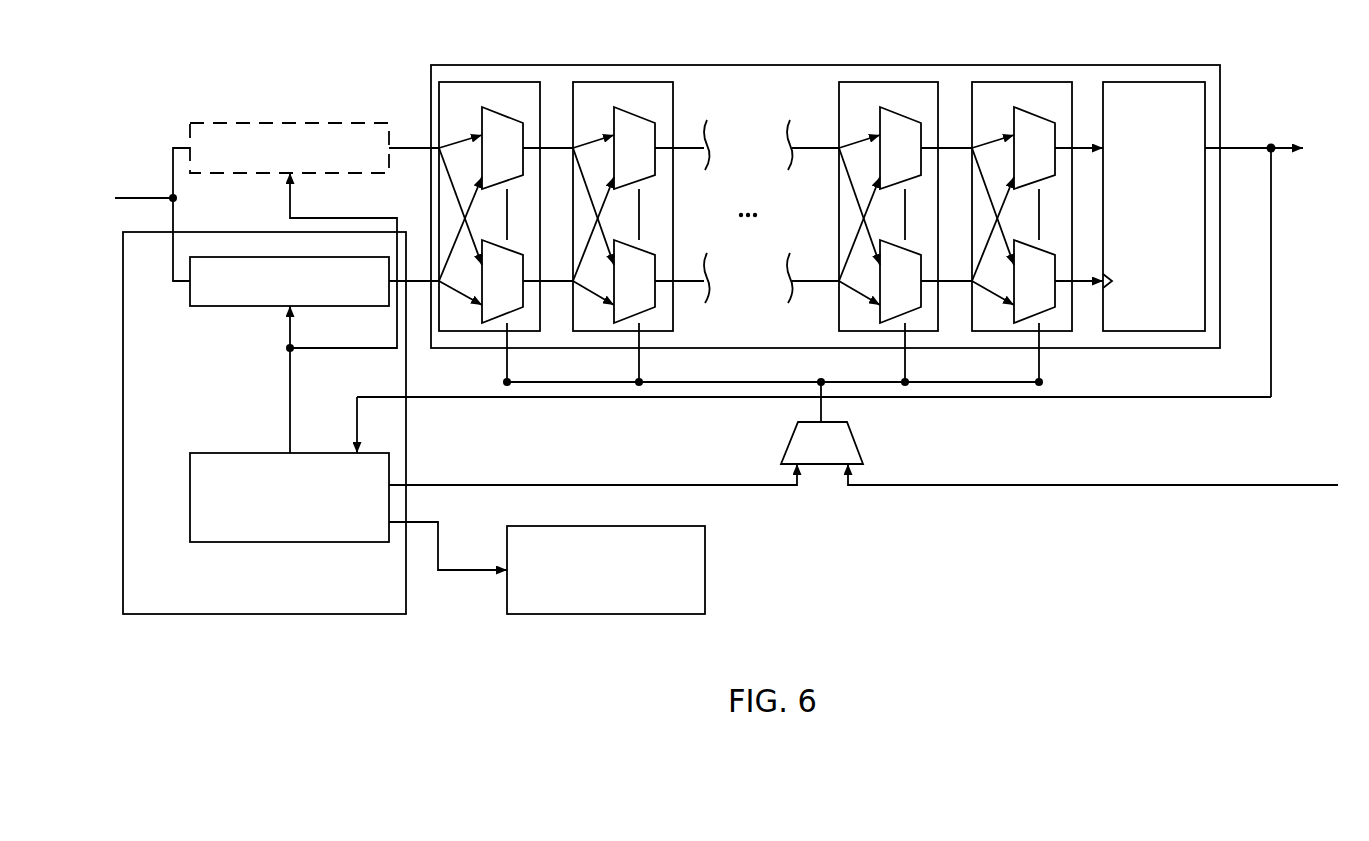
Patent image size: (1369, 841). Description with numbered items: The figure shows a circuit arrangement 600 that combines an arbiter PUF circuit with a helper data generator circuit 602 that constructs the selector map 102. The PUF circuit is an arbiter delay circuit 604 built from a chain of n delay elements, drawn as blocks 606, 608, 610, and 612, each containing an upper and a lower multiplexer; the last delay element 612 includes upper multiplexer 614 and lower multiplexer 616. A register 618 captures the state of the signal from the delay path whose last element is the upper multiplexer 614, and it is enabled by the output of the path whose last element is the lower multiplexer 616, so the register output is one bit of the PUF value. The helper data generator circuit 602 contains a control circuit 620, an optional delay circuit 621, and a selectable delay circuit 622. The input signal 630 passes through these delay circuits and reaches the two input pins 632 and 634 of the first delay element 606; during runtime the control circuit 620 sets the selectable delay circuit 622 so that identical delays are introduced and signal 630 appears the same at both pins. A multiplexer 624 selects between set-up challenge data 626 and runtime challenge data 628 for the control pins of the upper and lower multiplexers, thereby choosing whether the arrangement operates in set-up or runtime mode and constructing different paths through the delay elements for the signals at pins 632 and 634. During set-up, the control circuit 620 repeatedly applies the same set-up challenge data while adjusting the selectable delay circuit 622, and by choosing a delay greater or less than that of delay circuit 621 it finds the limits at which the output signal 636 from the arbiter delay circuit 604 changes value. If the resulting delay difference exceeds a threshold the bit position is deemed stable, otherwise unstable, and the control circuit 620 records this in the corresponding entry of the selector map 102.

The circuit arrangement 600 is at (1294, 96).
The helper data generator circuit 602 is at (322, 607).
The arbiter delay circuit 604 is at (768, 102).
The delay element 606 is at (537, 111).
The delay element 608 is at (668, 113).
The delay element 610 is at (935, 113).
The last delay element 612 is at (1068, 113).
The upper multiplexer 614 is at (1050, 161).
The lower multiplexer 616 is at (1050, 295).
The register 618 is at (1168, 218).
The control circuit 620 is at (305, 533).
The delay circuit 621 is at (330, 158).
The selectable delay circuit 622 is at (376, 291).
The multiplexer 624 is at (836, 456).
The set-up challenge data 626 is at (530, 485).
The runtime challenge data 628 is at (1038, 485).
The input signal 630 is at (143, 196).
The input pin 632 is at (439, 148).
The input pin 634 is at (439, 281).
The output signal 636 is at (1271, 236).
The selector map 102 is at (620, 607).